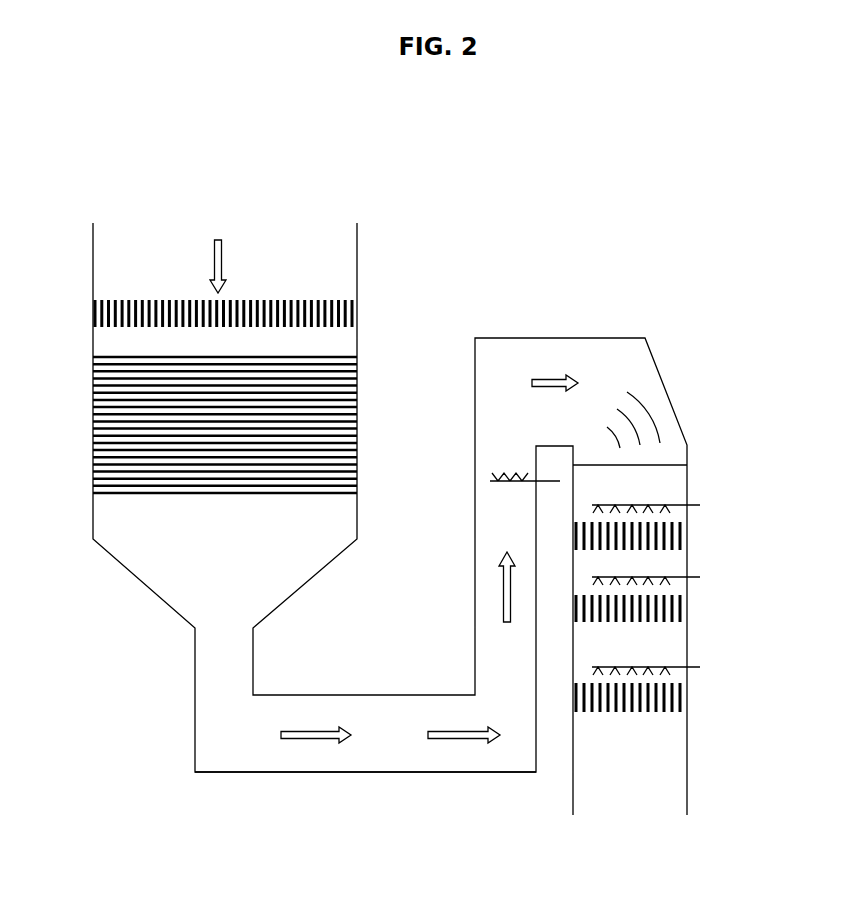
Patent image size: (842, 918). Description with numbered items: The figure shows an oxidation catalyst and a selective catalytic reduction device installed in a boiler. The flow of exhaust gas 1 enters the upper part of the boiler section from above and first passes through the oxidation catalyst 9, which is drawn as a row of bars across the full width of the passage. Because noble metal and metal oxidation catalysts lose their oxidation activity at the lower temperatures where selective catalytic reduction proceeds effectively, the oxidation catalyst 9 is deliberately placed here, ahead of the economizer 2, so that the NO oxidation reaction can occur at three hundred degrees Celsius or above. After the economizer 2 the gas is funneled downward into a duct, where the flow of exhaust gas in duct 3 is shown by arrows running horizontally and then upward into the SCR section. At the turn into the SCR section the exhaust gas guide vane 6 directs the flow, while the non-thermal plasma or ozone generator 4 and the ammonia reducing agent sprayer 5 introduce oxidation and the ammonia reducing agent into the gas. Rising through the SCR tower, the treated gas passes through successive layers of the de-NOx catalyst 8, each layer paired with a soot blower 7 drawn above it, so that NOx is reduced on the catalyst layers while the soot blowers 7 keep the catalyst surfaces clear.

The flow of exhaust gas 1 is at (218, 252).
The economizer 2 is at (359, 391).
The flow of exhaust gas in duct 3 is at (380, 734).
The non-thermal plasma or ozone generator 4 is at (393, 774).
The ammonia reducing agent sprayer 5 is at (488, 471).
The exhaust gas guide vane 6 is at (657, 417).
The soot blower 7 is at (705, 503).
The de-NOx catalyst 8 is at (696, 607).
The oxidation catalyst 9 is at (359, 307).